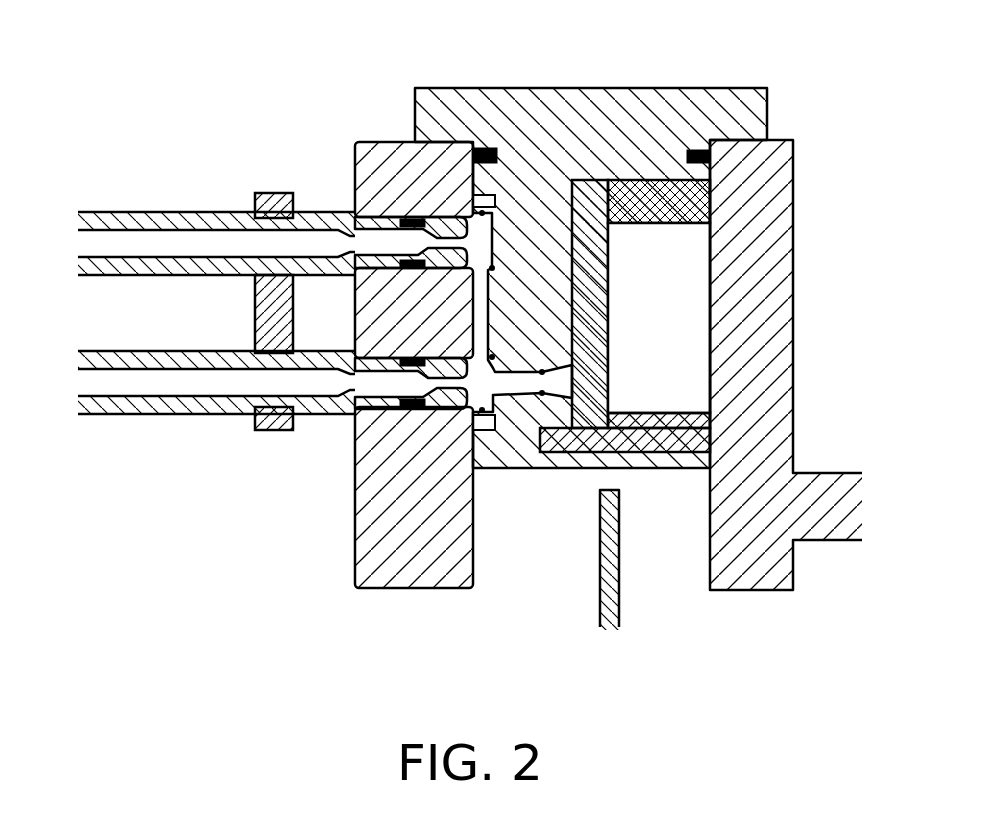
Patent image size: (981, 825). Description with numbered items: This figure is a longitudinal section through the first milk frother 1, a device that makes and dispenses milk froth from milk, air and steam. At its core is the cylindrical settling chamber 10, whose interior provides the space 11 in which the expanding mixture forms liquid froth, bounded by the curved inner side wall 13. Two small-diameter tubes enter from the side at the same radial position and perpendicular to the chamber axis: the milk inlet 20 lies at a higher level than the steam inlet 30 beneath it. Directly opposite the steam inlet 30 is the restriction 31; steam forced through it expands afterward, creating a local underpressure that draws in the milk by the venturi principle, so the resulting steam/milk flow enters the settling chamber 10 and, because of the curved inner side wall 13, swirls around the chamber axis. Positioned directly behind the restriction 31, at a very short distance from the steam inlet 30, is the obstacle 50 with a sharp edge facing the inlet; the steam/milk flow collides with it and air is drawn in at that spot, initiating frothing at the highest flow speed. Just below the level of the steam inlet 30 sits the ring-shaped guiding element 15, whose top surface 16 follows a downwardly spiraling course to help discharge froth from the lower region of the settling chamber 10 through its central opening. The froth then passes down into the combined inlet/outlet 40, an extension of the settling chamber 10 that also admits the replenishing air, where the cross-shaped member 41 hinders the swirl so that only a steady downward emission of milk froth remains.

The first milk frother 1 is at (470, 343).
The settling chamber 10 is at (688, 279).
The space 11 is at (688, 338).
The inner side wall 13 is at (705, 252).
The ring-shaped guiding element 15 is at (688, 432).
The top surface 16 is at (675, 413).
The milk inlet 20 is at (201, 245).
The steam inlet 30 is at (201, 383).
The restriction 31 is at (517, 380).
The combined inlet/outlet 40 is at (529, 585).
The member 41 is at (627, 604).
The obstacle 50 is at (592, 192).